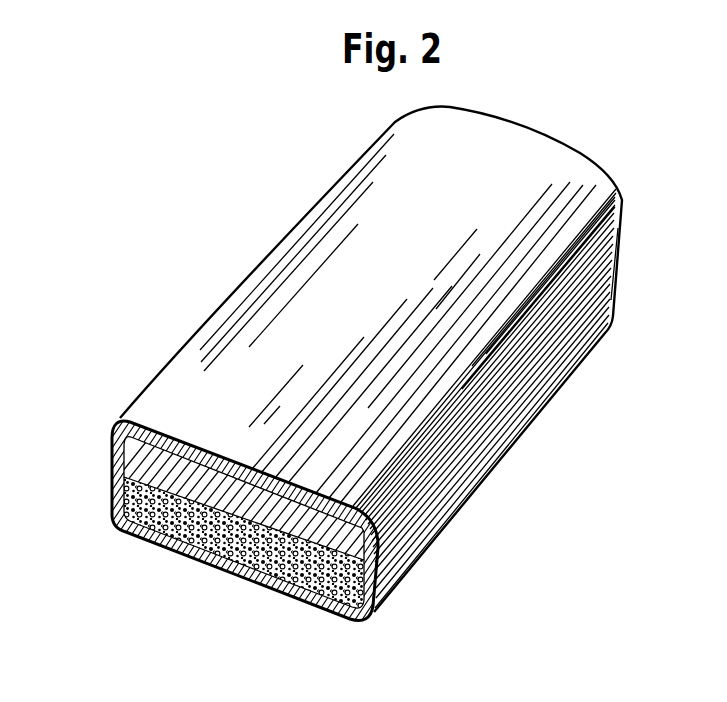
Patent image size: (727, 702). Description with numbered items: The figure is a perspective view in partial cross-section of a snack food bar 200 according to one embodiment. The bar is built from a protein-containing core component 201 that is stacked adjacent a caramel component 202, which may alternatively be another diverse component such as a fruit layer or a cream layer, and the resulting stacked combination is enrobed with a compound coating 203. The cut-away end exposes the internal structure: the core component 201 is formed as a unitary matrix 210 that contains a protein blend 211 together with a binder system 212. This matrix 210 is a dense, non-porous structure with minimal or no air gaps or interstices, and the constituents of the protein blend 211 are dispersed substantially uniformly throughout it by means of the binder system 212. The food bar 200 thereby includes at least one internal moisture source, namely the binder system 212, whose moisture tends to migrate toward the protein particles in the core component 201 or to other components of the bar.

The snack food bar 200 is at (172, 216).
The protein-containing core component 201 is at (141, 535).
The caramel component 202 is at (167, 461).
The compound coating 203 is at (271, 522).
The unitary matrix 210 is at (199, 553).
The protein blend 211 is at (182, 550).
The binder system 212 is at (163, 548).